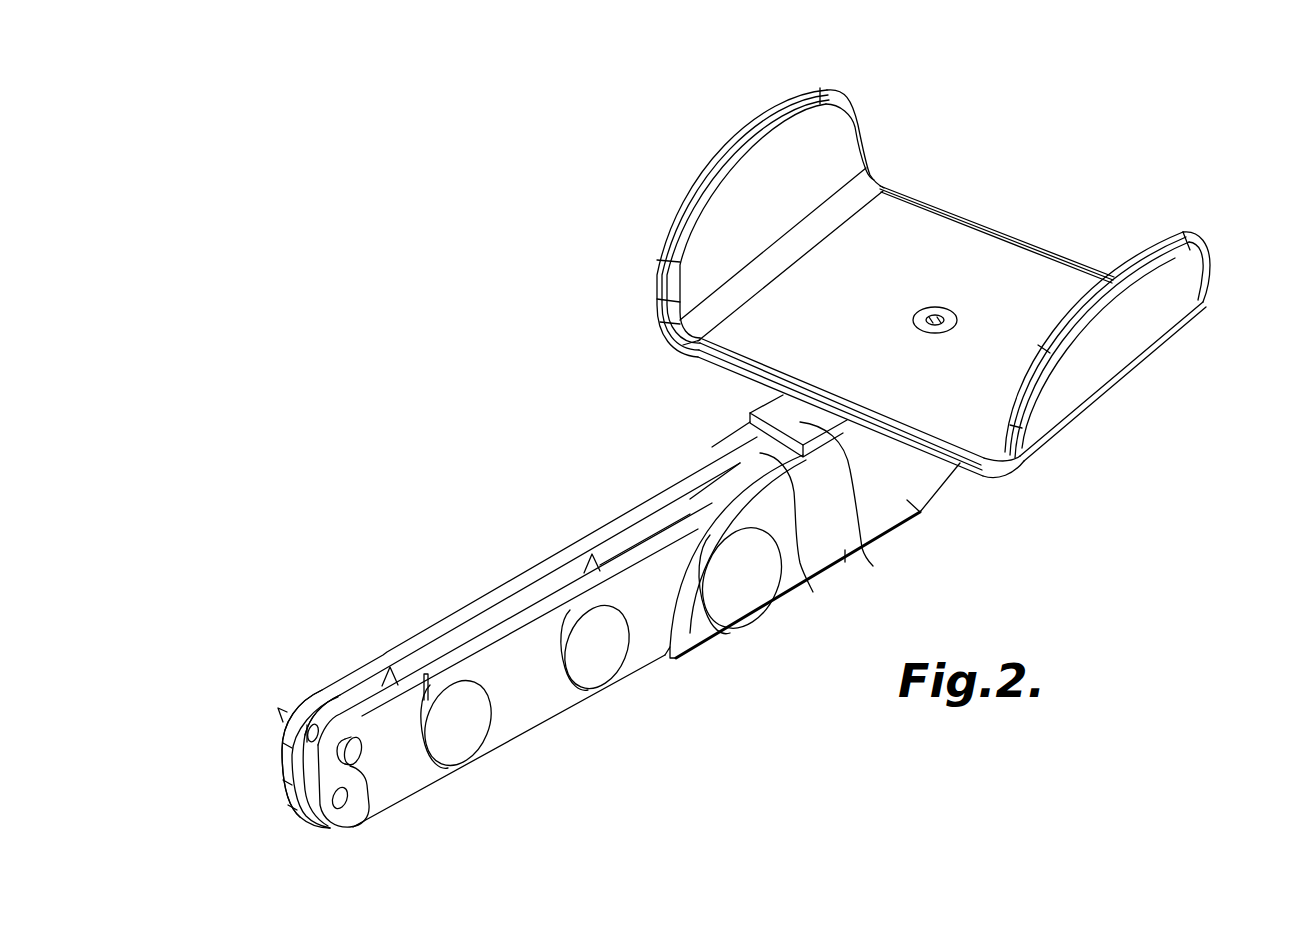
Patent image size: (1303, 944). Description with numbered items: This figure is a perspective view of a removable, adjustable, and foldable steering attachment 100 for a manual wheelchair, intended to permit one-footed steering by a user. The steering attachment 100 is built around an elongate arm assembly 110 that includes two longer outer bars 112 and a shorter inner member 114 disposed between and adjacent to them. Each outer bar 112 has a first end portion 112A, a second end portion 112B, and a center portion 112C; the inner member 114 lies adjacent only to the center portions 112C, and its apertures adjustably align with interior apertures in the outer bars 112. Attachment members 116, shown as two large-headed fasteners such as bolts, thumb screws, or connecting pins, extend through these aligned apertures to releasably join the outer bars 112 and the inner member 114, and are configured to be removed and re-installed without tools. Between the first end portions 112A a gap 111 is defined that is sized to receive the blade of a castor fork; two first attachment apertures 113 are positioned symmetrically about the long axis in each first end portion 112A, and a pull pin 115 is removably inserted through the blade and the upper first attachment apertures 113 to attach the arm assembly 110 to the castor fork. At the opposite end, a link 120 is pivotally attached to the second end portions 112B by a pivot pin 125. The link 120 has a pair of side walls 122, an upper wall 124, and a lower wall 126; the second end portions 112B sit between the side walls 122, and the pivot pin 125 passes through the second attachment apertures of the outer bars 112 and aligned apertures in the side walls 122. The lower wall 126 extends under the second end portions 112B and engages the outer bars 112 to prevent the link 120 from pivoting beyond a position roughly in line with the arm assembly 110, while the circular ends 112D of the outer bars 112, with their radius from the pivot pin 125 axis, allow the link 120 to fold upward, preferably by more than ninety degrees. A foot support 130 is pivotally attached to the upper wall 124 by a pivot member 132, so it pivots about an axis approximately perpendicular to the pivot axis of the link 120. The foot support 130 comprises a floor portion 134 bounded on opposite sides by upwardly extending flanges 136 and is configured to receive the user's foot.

The steering attachment 100 is at (1106, 112).
The elongate arm assembly 110 is at (352, 613).
The gap 111 is at (357, 688).
The outer bars 112 is at (434, 619).
The first end portion 112A is at (323, 692).
The second end portion 112B is at (667, 498).
The center portion 112C is at (630, 590).
The ends of the outer bars 112D is at (717, 500).
The first attachment apertures 113 is at (338, 762).
The inner member 114 is at (477, 620).
The pull pin 115 is at (353, 823).
The attachment members 116 is at (460, 735).
The link 120 is at (907, 537).
The side walls 122 is at (813, 592).
The upper wall 124 is at (873, 566).
The pivot pin 125 is at (750, 588).
The lower wall 126 is at (845, 562).
The foot support 130 is at (917, 193).
The pivot member 132 is at (948, 305).
The floor portion 134 is at (1062, 265).
The flanges 136 is at (838, 125).